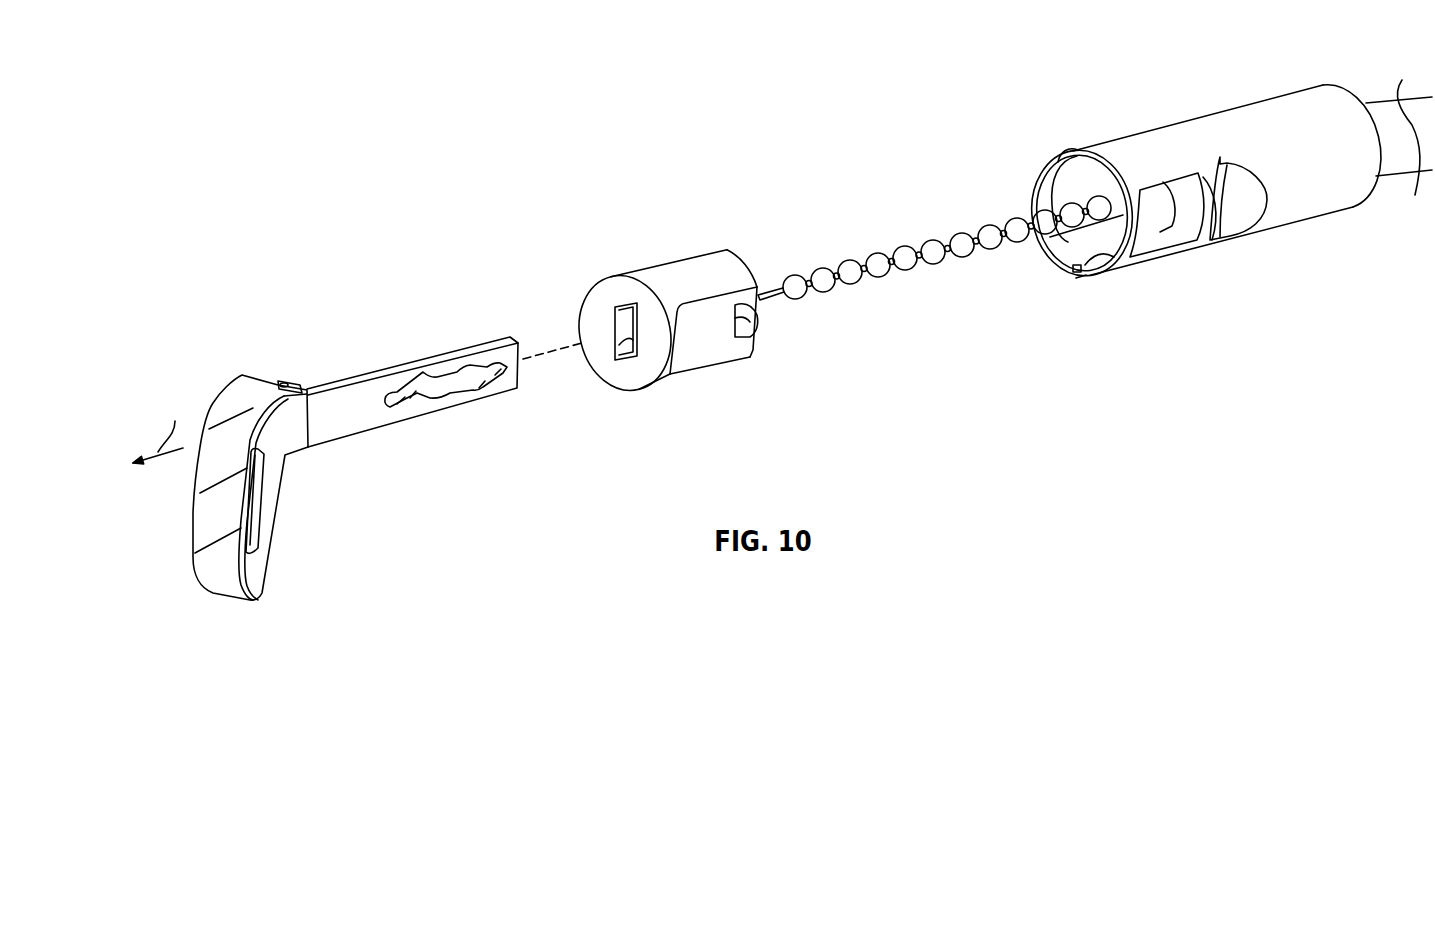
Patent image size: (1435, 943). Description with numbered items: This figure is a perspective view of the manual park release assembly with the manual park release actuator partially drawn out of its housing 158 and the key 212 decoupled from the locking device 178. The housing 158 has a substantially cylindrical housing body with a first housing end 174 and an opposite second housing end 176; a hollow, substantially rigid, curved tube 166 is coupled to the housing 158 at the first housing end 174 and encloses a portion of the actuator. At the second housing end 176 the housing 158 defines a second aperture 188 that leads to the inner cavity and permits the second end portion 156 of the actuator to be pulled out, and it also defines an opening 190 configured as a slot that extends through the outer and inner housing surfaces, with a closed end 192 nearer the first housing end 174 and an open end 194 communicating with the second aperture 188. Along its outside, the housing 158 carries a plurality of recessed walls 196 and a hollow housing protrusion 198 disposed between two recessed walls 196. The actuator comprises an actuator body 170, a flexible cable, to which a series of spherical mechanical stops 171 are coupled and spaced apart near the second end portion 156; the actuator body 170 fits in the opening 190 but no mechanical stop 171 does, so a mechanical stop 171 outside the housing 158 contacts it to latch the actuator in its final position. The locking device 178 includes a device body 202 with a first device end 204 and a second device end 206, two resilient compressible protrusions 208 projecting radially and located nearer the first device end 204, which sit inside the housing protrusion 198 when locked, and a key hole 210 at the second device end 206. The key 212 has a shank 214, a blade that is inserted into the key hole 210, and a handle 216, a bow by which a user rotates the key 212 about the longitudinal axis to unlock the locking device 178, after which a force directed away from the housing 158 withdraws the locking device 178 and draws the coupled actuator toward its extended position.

The second end portion 156 is at (770, 290).
The housing 158 is at (1243, 107).
The tube 166 is at (1377, 97).
The actuator body 170 is at (952, 238).
The mechanical stop 171 is at (799, 299).
The first housing end 174 is at (1360, 98).
The second housing end 176 is at (1067, 152).
The locking device 178 is at (613, 288).
The second aperture 188 is at (1033, 197).
The opening 190 is at (1081, 290).
The closed end 192 is at (1117, 266).
The open end 194 is at (1075, 273).
The recessed wall 196 is at (1153, 187).
The housing protrusion 198 is at (1177, 197).
The device body 202 is at (703, 363).
The first device end 204 is at (727, 250).
The second device end 206 is at (620, 375).
The compressible protrusion 208 is at (757, 323).
The key hole 210 is at (615, 343).
The key 212 is at (425, 352).
The shank 214 is at (363, 425).
The handle 216 is at (280, 560).